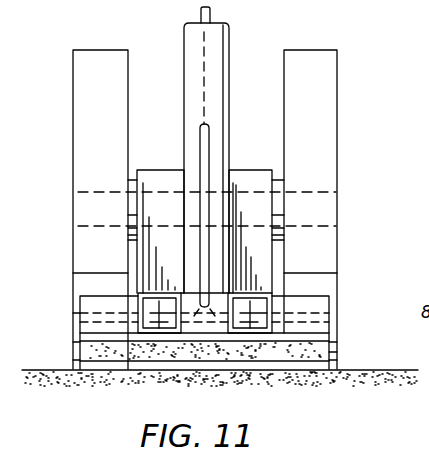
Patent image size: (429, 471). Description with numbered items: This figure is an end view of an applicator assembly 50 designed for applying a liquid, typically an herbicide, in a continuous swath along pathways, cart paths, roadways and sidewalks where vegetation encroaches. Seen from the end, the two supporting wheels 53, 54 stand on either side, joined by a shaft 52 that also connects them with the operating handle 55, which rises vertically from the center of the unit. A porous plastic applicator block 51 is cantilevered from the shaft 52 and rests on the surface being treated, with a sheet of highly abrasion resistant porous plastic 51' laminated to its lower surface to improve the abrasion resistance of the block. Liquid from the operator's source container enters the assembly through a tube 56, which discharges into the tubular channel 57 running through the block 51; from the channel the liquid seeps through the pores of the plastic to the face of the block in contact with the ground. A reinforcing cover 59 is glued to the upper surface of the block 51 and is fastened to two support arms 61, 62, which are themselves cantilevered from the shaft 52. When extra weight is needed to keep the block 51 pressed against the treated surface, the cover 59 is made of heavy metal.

The applicator assembly 50 is at (372, 117).
The porous plastic applicator block 51 is at (230, 354).
The abrasion resistant porous plastic sheet 51' is at (221, 390).
The shaft 52 is at (330, 203).
The supporting wheel 53 is at (128, 70).
The supporting wheel 54 is at (338, 72).
The operating handle 55 is at (230, 57).
The tube 56 is at (209, 143).
The tubular channel 57 is at (329, 313).
The reinforcing cover 59 is at (337, 334).
The support arm 61 is at (128, 262).
The support arm 62 is at (272, 257).